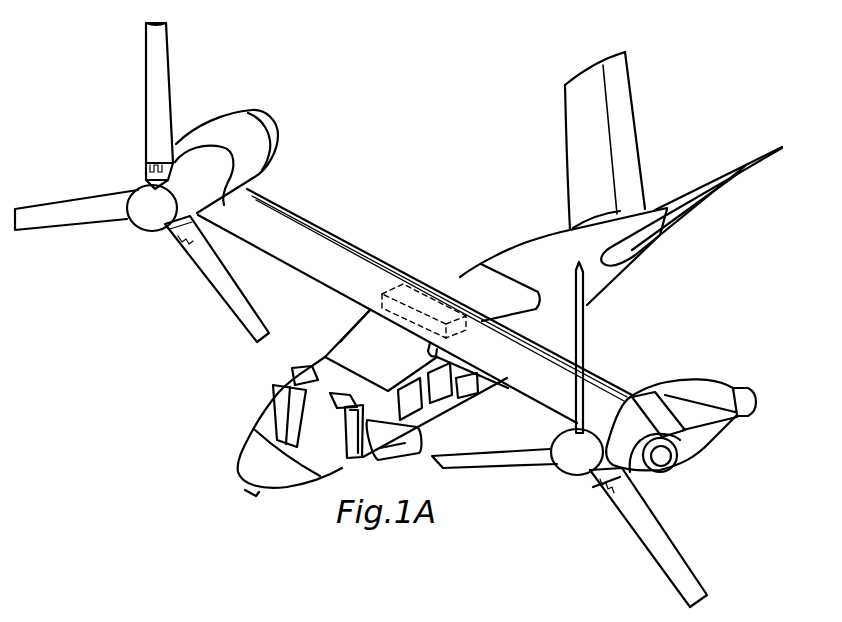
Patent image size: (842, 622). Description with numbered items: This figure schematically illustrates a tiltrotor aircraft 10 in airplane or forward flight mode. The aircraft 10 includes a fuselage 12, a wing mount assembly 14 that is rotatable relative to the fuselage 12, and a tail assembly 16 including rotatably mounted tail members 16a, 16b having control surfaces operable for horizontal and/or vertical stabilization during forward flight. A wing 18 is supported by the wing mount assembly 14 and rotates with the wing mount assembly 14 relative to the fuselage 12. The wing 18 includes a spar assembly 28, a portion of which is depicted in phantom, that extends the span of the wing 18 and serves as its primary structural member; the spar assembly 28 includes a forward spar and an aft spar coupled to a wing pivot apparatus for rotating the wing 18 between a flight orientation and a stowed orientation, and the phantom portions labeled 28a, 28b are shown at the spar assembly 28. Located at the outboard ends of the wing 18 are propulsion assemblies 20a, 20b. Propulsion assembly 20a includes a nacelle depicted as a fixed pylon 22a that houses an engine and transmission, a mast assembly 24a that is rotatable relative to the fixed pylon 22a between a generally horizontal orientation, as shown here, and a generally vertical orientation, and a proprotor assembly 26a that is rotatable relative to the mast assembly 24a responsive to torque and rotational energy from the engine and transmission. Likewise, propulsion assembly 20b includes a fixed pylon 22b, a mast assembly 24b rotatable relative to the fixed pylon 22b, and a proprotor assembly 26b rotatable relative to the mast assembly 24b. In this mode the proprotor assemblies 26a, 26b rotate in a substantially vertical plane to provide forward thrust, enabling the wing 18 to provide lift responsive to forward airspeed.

The tiltrotor aircraft 10 is at (420, 179).
The fuselage 12 is at (528, 250).
The wing mount assembly 14 is at (465, 280).
The tail assembly 16 is at (637, 107).
The tail member 16a is at (692, 200).
The tail member 16b is at (591, 84).
The wing 18 is at (320, 240).
The propulsion assembly 20a is at (680, 383).
The propulsion assembly 20b is at (227, 116).
The fixed pylon 22a is at (710, 392).
The fixed pylon 22b is at (253, 130).
The mast assembly 24a is at (630, 405).
The mast assembly 24b is at (200, 156).
The proprotor assembly 26a is at (673, 560).
The proprotor assembly 26b is at (150, 107).
The spar assembly 28 is at (392, 288).
The payload mounting location 28a is at (368, 318).
The payload pod top 28b is at (423, 293).